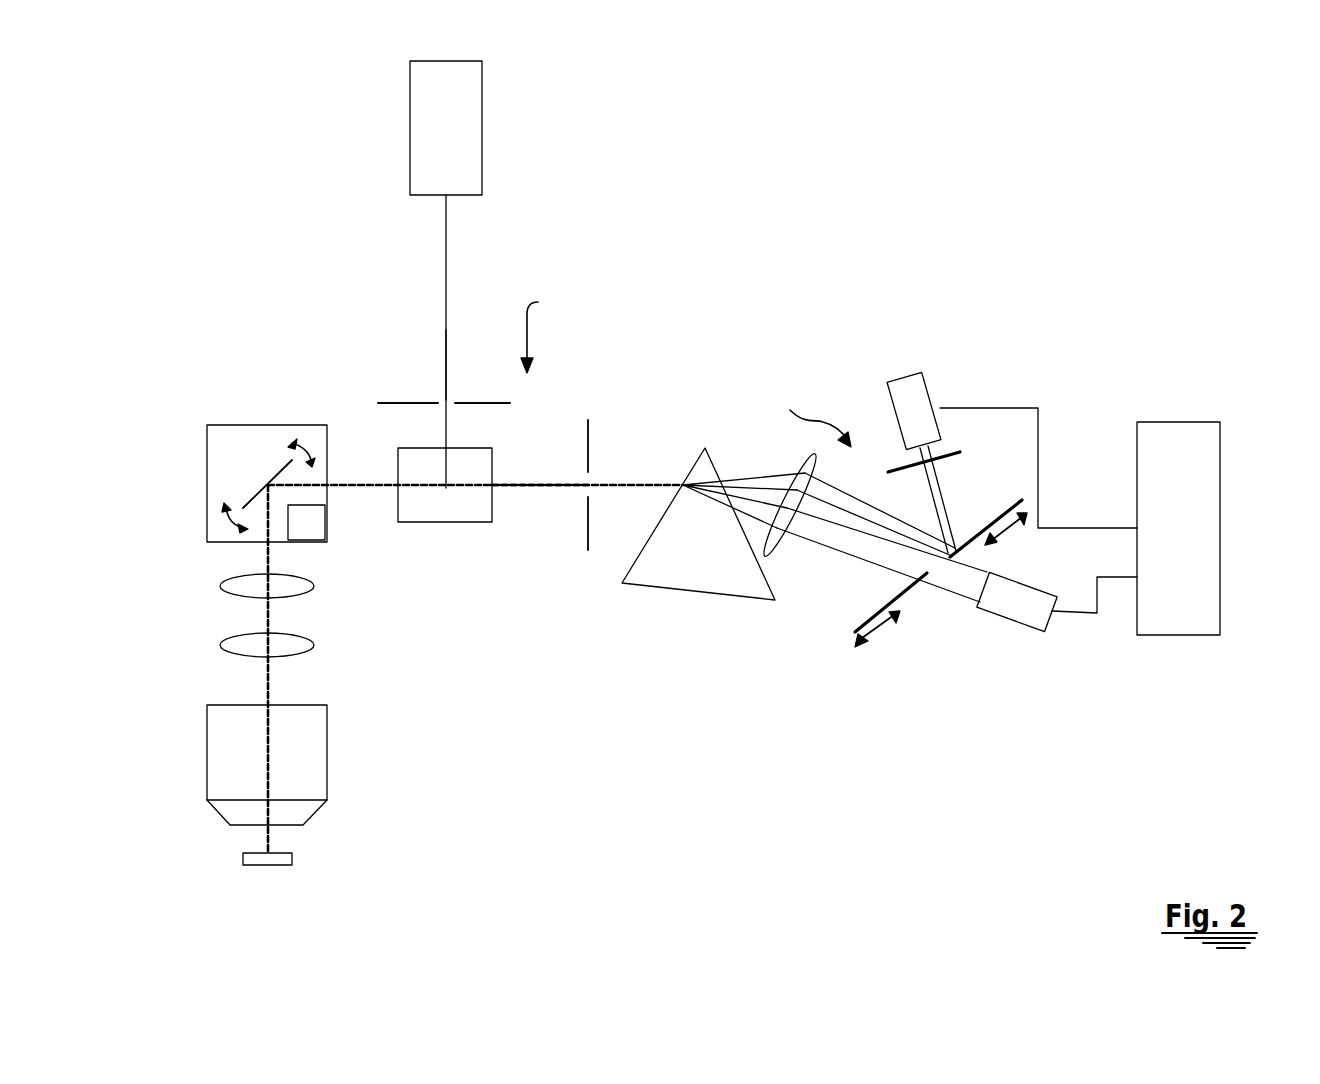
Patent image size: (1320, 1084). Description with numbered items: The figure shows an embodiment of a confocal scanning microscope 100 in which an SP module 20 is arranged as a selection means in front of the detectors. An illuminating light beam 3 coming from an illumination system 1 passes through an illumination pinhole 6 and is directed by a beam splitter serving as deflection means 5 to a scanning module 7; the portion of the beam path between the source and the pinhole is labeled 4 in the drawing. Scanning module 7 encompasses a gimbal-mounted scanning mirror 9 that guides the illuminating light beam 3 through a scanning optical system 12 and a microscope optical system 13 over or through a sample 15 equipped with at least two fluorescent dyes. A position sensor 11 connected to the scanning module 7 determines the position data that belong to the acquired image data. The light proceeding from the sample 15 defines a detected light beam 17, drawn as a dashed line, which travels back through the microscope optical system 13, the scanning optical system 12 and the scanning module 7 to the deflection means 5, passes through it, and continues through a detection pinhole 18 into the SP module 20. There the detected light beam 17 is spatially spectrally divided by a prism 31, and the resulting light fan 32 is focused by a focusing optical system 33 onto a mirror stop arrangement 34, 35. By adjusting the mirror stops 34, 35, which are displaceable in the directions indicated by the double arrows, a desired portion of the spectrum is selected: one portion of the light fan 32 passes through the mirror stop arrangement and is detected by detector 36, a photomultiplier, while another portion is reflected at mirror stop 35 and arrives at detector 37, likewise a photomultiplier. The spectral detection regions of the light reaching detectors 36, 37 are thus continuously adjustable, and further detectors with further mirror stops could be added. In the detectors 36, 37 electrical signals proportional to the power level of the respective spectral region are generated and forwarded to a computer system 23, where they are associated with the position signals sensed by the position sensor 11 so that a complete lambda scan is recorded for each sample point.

The illumination system 1 is at (470, 106).
The illuminating light beam 3 is at (446, 232).
The illumination beam 4 is at (446, 368).
The confocal scanning microscope 100 is at (557, 331).
The deflection means 5 is at (470, 513).
The illumination pinhole 6 is at (398, 403).
The scanning module 7 is at (230, 448).
The scanning mirror 9 is at (253, 487).
The position sensor 11 is at (312, 528).
The scanning optical system 12 is at (230, 645).
The microscope optical system 13 is at (232, 733).
The sample 15 is at (255, 855).
The detected light beam 17 is at (505, 483).
The detection pinhole 18 is at (590, 443).
The SP module 20 is at (879, 490).
The computer system 23 is at (1198, 445).
The prism 31 is at (698, 580).
The light fan 32 is at (745, 482).
The focusing optical system 33 is at (767, 558).
The mirror stop 34 is at (923, 577).
The mirror stop 35 is at (980, 532).
The detector 36 is at (988, 603).
The detector 37 is at (897, 383).